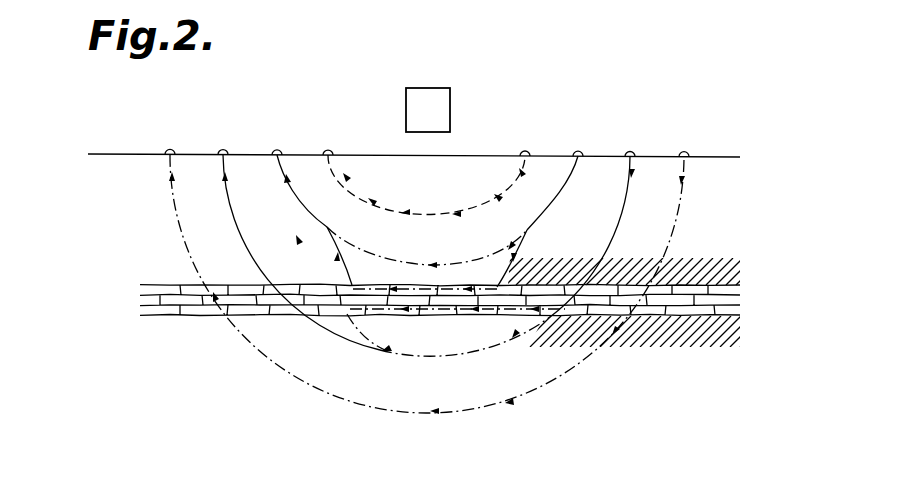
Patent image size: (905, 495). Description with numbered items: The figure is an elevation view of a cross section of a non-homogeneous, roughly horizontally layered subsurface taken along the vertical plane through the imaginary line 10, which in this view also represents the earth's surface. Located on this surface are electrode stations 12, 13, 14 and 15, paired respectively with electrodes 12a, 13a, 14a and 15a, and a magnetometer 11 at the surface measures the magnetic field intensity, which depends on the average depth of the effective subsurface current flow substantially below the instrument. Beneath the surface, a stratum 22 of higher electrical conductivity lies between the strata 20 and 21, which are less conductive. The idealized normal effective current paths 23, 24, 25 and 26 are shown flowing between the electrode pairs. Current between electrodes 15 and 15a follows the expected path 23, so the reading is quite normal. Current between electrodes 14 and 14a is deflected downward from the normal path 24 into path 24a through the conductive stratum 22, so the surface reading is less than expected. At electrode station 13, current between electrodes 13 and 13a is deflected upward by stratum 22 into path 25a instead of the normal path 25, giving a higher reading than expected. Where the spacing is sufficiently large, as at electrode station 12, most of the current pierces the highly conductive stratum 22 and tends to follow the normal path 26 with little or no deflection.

The imaginary line 10 is at (118, 154).
The magnetometer 11 is at (450, 107).
The electrode station 12 is at (175, 137).
The electrode station 13 is at (228, 137).
The electrode station 14 is at (282, 137).
The electrode station 15 is at (333, 137).
The electrode 12a is at (684, 145).
The electrode 13a is at (630, 145).
The electrode 14a is at (578, 145).
The electrode 15a is at (525, 145).
The stratum 20 is at (722, 254).
The stratum 21 is at (702, 346).
The stratum of higher electrical conductivity 22 is at (150, 297).
The normal effective current path 23 is at (424, 213).
The normal effective current path 24 is at (401, 262).
The effective current path 24a is at (340, 262).
The normal effective current path 25 is at (494, 350).
The effective current path 25a is at (443, 315).
The normal effective current path 26 is at (322, 390).